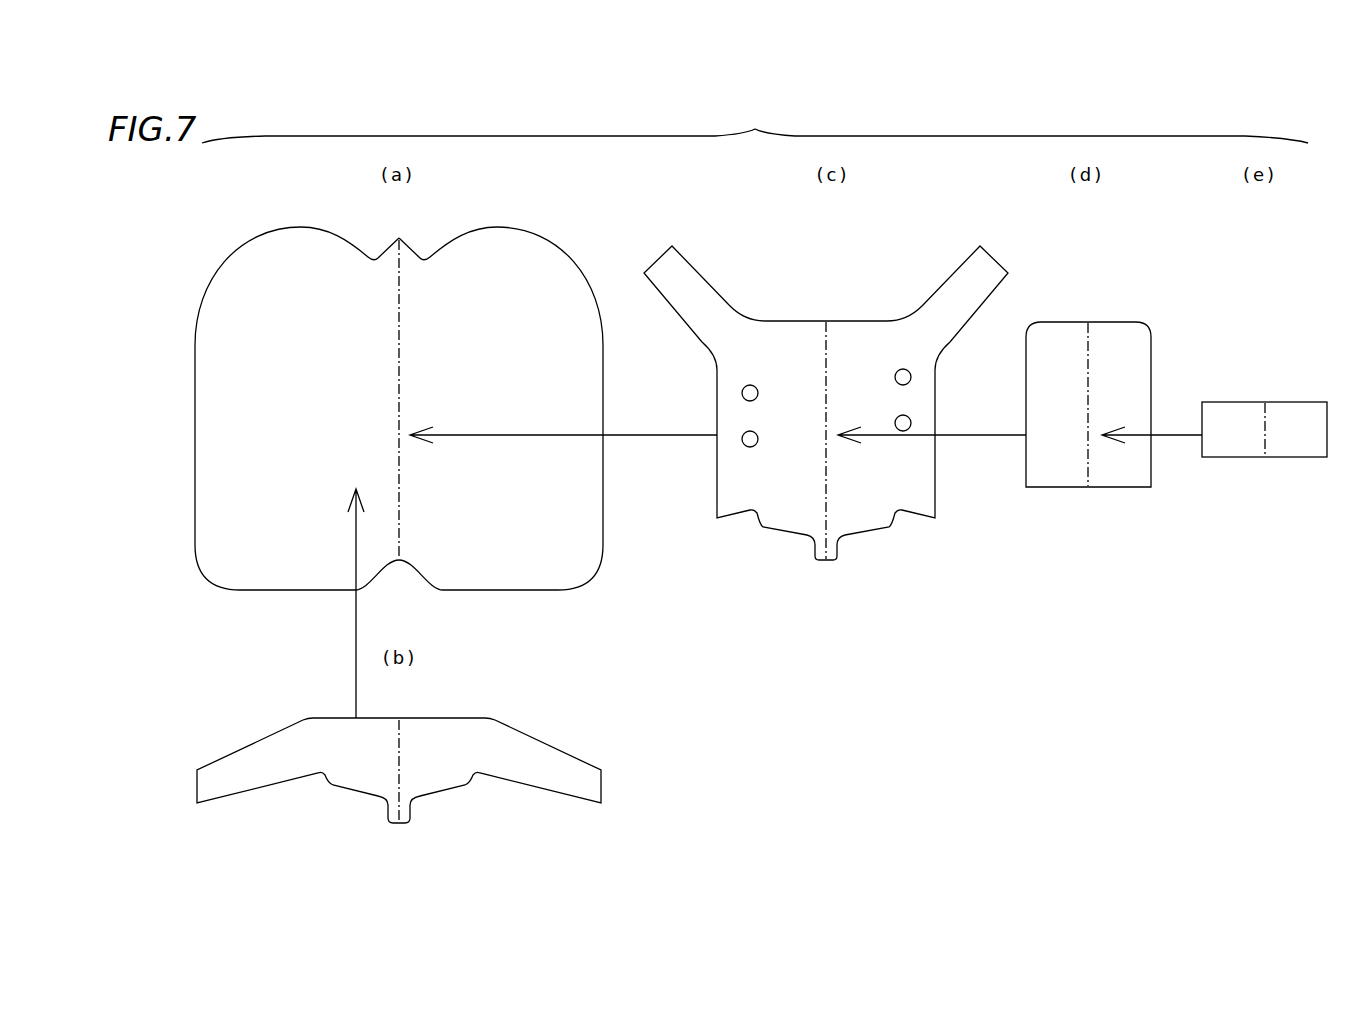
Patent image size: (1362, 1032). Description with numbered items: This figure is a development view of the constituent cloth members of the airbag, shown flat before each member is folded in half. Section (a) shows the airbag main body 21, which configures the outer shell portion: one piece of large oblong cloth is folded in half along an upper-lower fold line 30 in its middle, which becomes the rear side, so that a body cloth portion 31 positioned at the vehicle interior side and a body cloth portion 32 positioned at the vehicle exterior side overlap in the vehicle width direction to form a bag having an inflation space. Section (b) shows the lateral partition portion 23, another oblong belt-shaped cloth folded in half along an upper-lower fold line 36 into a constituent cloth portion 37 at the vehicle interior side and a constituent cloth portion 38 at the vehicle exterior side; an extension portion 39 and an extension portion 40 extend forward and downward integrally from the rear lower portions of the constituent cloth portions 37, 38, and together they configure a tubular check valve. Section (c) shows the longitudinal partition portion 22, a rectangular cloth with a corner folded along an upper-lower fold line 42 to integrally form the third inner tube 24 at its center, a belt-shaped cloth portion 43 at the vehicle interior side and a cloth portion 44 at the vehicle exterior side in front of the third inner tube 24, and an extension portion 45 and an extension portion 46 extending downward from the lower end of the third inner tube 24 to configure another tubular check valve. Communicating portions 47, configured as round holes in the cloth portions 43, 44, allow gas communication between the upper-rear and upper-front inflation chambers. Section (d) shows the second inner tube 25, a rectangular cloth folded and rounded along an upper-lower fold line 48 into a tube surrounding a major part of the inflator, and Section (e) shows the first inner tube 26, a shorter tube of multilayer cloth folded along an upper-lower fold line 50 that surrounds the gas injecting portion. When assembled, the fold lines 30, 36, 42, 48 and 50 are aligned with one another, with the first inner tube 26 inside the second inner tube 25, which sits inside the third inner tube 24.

The airbag main body 21 is at (399, 385).
The longitudinal partition portion 22 is at (826, 401).
The lateral partition portion 23 is at (399, 747).
The third inner tube 24 is at (805, 342).
The second inner tube 25 is at (1088, 381).
The first inner tube 26 is at (1264, 404).
The upper-lower fold line 30 is at (400, 397).
The body cloth portion 31 is at (226, 283).
The body cloth portion 32 is at (577, 285).
The upper-lower fold line 36 is at (402, 760).
The constituent cloth portion 37 is at (241, 760).
The constituent cloth portion 38 is at (549, 757).
The extension portion 39 is at (362, 782).
The extension portion 40 is at (440, 782).
The upper-lower fold line 42 is at (830, 460).
The cloth portion 43 is at (695, 323).
The cloth portion 44 is at (957, 323).
The extension portion 45 is at (784, 522).
The extension portion 46 is at (864, 522).
The communicating portions 47 is at (757, 433).
The upper-lower fold line 48 is at (1090, 388).
The upper-lower fold line 50 is at (1268, 437).